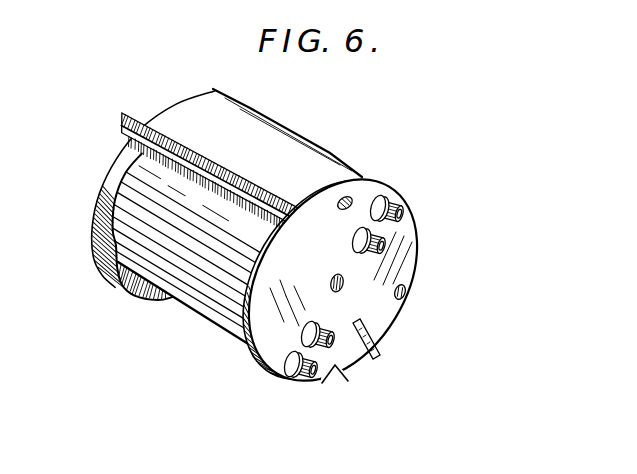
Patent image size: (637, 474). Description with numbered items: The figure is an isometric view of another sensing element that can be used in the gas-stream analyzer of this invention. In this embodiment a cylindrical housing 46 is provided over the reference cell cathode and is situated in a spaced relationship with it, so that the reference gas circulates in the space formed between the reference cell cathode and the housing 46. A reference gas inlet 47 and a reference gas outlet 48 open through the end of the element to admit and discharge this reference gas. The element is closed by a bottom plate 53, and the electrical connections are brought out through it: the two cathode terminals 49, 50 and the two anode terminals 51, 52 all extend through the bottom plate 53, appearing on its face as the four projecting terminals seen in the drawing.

The housing 46 is at (281, 133).
The reference gas inlet 47 is at (350, 204).
The reference gas outlet 48 is at (406, 294).
The cathode terminal 49 is at (295, 376).
The cathode terminal 50 is at (393, 204).
The anode terminal 51 is at (349, 367).
The anode terminal 52 is at (386, 243).
The bottom plate 53 is at (248, 352).